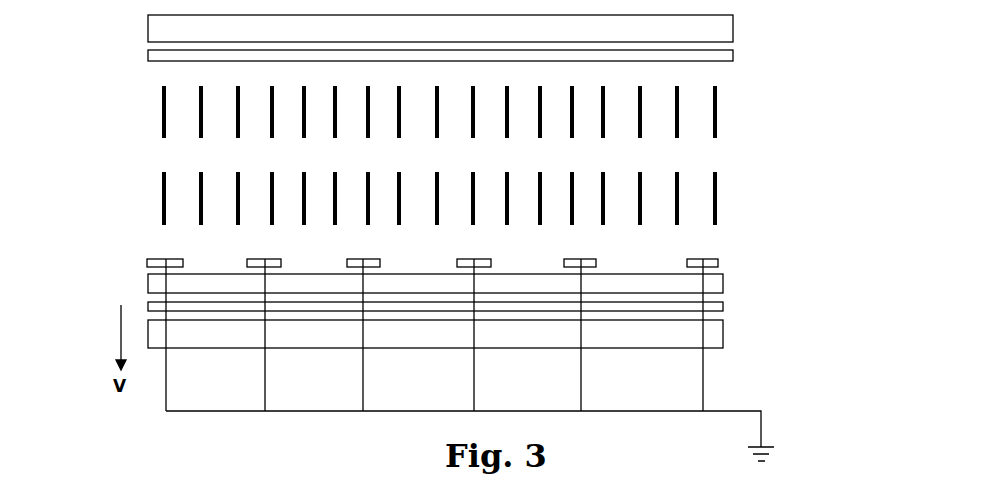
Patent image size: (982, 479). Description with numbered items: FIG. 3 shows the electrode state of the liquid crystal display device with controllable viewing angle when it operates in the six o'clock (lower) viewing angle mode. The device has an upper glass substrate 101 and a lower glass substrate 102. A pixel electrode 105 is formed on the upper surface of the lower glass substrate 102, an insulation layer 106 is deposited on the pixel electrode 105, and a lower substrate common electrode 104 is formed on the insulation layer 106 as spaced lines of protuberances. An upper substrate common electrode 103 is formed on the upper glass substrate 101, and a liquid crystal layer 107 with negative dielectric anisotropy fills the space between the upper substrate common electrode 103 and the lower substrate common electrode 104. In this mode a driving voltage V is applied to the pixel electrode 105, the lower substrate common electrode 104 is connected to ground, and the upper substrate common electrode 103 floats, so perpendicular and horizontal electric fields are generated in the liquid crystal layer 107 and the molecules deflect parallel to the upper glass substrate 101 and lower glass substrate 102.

The upper glass substrate 101 is at (705, 27).
The lower glass substrate 102 is at (728, 338).
The upper substrate common electrode 103 is at (160, 58).
The lower substrate common electrode 104 is at (150, 264).
The pixel electrode 105 is at (150, 310).
The insulation layer 106 is at (720, 285).
The liquid crystal layer 107 is at (182, 193).